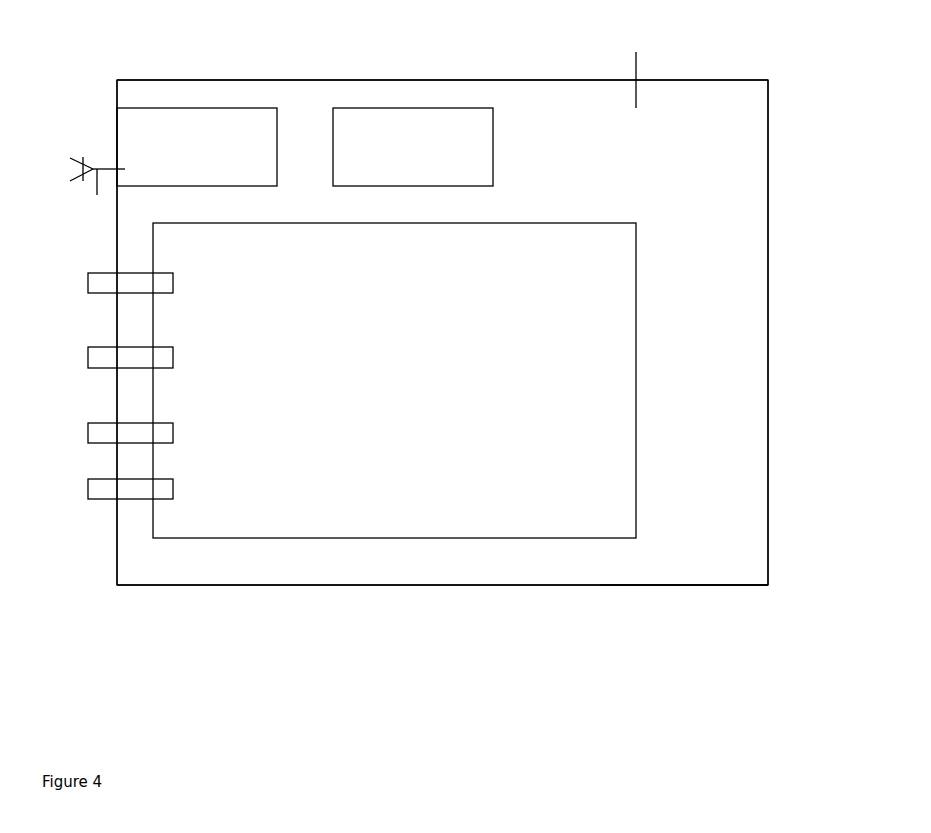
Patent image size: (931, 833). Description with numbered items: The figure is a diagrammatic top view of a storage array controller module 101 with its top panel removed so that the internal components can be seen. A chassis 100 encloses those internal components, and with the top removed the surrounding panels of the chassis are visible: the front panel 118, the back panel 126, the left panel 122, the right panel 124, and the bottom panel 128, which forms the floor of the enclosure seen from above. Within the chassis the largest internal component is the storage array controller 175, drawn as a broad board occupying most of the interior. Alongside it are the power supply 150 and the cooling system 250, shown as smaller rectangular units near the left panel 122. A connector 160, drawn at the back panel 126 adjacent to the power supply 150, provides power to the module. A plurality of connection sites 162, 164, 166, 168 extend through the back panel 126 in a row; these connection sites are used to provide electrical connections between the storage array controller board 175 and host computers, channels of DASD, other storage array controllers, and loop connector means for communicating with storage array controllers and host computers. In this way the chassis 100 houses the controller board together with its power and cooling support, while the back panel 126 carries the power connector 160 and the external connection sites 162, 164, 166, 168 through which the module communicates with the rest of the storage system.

The chassis 100 is at (768, 462).
The storage array controller module 101 is at (712, 585).
The front panel 118 is at (768, 284).
The left panel 122 is at (484, 79).
The right panel 124 is at (343, 585).
The back panel 126 is at (117, 558).
The bottom panel 128 is at (640, 64).
The power supply 150 is at (135, 138).
The connector 160 is at (97, 193).
The connection site 162 is at (97, 282).
The connection site 164 is at (97, 357).
The connection site 166 is at (88, 433).
The connection site 168 is at (97, 490).
The storage array controller 175 is at (483, 479).
The cooling system 250 is at (418, 128).